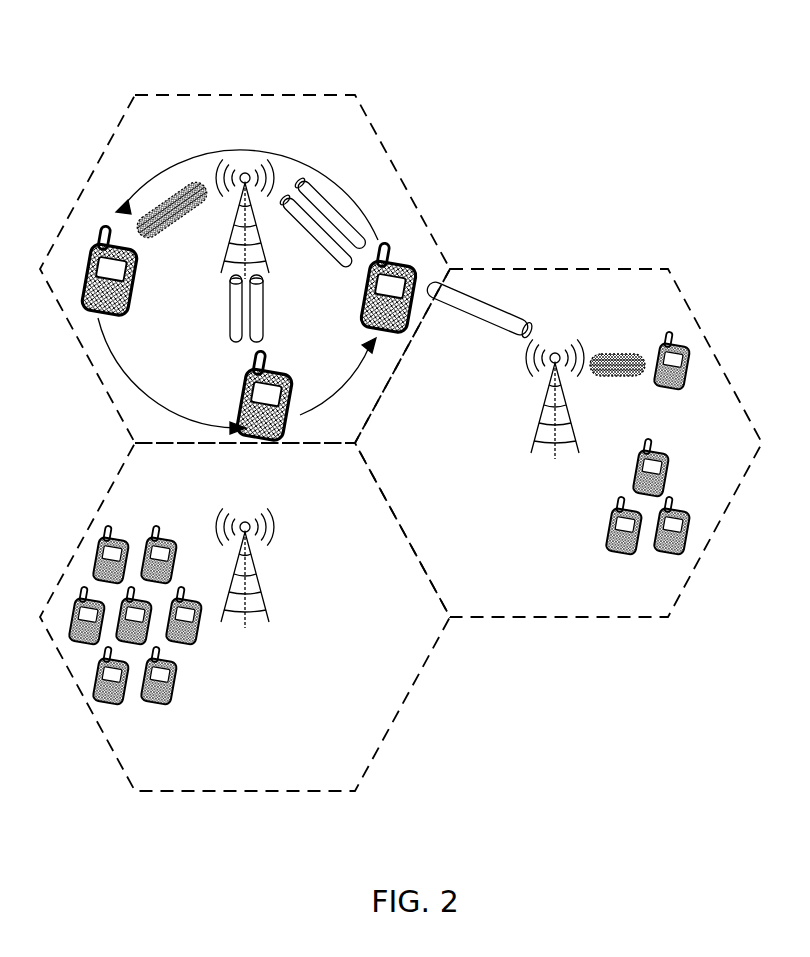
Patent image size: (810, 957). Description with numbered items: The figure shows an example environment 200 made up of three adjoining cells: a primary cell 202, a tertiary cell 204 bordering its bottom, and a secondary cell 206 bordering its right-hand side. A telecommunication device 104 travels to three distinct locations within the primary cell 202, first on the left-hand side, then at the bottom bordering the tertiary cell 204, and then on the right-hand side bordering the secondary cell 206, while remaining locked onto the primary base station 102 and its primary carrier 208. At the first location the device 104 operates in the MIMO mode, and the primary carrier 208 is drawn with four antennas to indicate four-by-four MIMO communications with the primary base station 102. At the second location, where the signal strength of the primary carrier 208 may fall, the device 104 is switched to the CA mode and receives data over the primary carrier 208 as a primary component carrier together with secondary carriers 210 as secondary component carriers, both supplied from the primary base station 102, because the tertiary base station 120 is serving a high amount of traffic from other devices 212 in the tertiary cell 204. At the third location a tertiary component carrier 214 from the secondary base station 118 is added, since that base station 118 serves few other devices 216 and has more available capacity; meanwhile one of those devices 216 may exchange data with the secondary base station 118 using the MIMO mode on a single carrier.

The environment 200 is at (108, 50).
The primary cell 202 is at (232, 143).
The tertiary cell 204 is at (229, 783).
The secondary cell 206 is at (544, 608).
The primary carrier 208 is at (178, 198).
The secondary carriers 210 is at (263, 312).
The other devices 212 is at (154, 721).
The tertiary component carrier 214 is at (477, 300).
The other devices 216 is at (715, 484).
The primary base station 102 is at (237, 250).
The telecommunication device 104 is at (92, 244).
The secondary base station 118 is at (540, 422).
The tertiary base station 120 is at (262, 585).